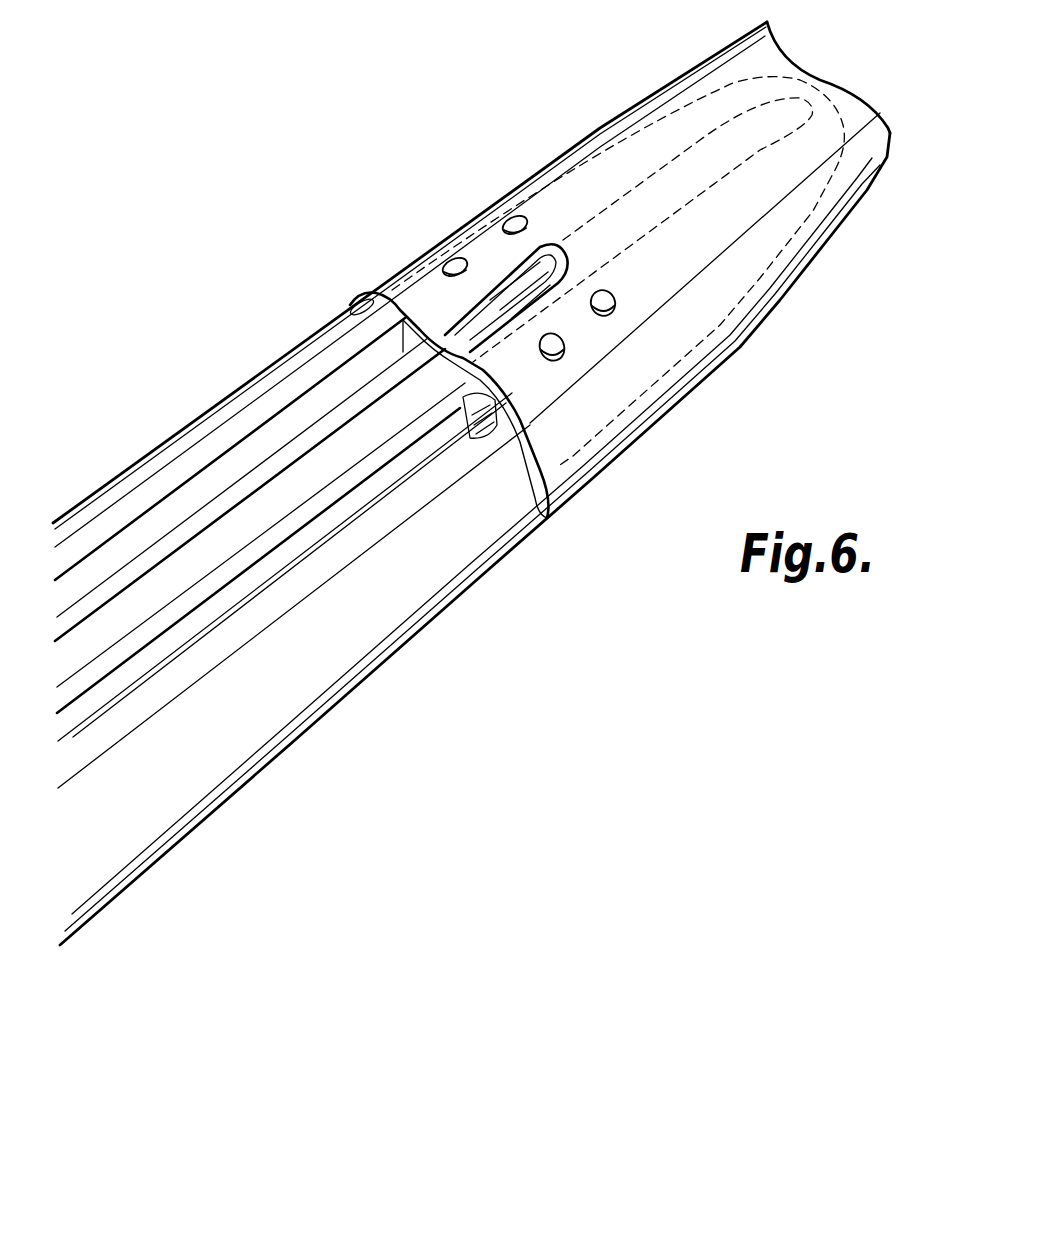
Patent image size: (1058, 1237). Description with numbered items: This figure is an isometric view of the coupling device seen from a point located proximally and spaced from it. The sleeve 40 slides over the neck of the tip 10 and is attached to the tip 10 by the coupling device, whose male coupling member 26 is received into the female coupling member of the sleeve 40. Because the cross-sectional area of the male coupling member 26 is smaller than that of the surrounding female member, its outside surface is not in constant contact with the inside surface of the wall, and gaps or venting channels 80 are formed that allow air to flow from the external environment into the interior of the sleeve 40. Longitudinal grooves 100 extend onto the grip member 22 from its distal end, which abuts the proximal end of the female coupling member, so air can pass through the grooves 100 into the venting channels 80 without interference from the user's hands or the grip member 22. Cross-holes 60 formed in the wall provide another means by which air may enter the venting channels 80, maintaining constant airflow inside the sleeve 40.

The tip 10 is at (203, 920).
The grip member 22 is at (293, 741).
The male coupling member 26 is at (840, 117).
The sleeve 40 is at (834, 246).
The cross-holes 60 is at (453, 259).
The venting channels 80 is at (372, 340).
The grooves 100 is at (340, 390).